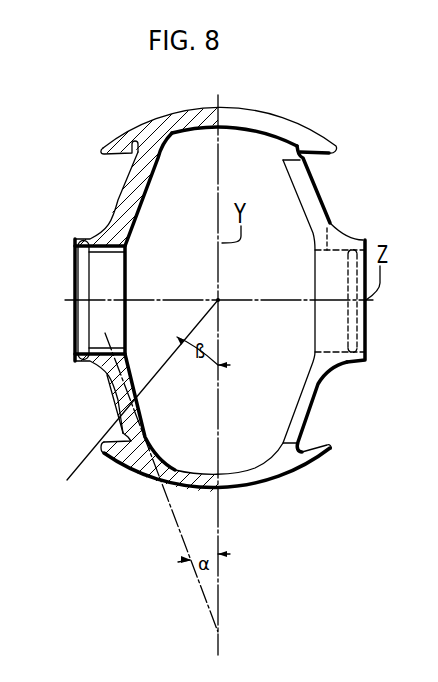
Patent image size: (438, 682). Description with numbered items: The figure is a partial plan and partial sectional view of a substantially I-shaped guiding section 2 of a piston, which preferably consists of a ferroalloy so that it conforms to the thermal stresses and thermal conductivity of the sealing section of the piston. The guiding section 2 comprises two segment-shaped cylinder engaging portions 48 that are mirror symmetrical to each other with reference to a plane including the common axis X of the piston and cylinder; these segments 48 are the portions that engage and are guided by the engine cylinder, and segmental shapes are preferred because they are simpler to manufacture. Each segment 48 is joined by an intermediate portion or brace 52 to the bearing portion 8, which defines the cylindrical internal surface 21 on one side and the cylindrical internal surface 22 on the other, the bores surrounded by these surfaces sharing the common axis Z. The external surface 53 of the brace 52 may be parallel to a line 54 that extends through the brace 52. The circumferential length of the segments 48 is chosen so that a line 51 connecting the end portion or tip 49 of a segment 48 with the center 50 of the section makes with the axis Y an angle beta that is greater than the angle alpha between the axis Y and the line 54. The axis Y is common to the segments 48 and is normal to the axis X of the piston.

The guiding section 2 is at (258, 491).
The bearing portion 8 is at (75, 360).
The cylindrical internal surface 21 is at (108, 249).
The cylindrical internal surface 22 is at (330, 224).
The segment-shaped cylinder engaging portion 48 is at (172, 505).
The end portion or tip 49 is at (106, 454).
The center 50 is at (222, 300).
The line 51 is at (157, 371).
The intermediate portion or brace 52 is at (143, 414).
The external surface 53 is at (131, 188).
The line 54 is at (201, 586).